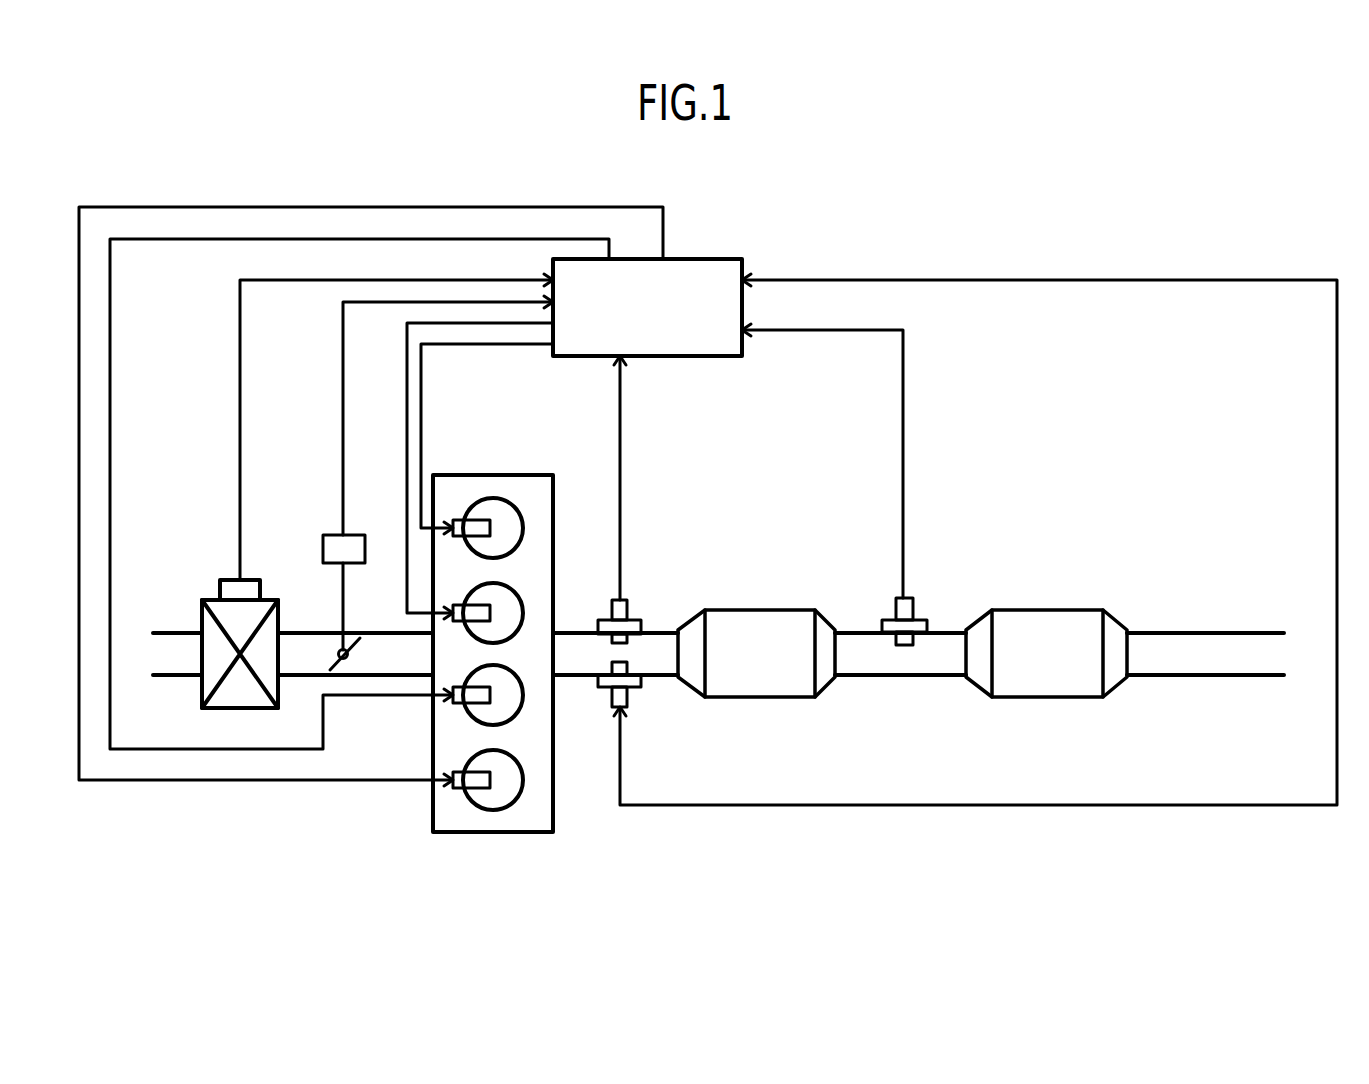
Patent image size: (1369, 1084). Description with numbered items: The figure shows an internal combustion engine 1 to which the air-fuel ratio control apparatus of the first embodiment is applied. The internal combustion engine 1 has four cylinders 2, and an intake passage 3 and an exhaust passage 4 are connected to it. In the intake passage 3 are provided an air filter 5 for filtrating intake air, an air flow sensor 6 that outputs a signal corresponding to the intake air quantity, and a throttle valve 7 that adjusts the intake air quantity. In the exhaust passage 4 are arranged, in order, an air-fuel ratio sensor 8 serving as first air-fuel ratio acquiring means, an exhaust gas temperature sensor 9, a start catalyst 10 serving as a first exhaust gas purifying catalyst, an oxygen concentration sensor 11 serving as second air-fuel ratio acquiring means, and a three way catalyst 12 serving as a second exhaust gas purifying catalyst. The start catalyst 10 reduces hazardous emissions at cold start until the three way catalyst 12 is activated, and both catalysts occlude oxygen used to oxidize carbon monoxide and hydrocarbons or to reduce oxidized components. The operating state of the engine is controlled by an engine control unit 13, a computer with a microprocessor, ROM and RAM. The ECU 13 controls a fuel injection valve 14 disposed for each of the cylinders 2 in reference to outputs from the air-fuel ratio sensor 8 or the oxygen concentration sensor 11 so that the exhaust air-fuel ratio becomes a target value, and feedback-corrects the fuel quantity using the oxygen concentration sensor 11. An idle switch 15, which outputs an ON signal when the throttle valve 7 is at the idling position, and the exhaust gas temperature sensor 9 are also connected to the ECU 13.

The internal combustion engine 1 is at (497, 833).
The cylinders 2 is at (517, 548).
The intake passage 3 is at (175, 630).
The exhaust passage 4 is at (1198, 630).
The air filter 5 is at (268, 600).
The air flow sensor 6 is at (220, 580).
The throttle valve 7 is at (332, 665).
The air-fuel ratio sensor 8 is at (633, 617).
The exhaust gas temperature sensor 9 is at (638, 690).
The start catalyst 10 is at (760, 610).
The oxygen concentration sensor 11 is at (917, 602).
The three way catalyst 12 is at (1040, 610).
The engine control unit (ECU) 13 is at (740, 257).
The fuel injection valve 14 is at (457, 538).
The idle switch 15 is at (332, 535).